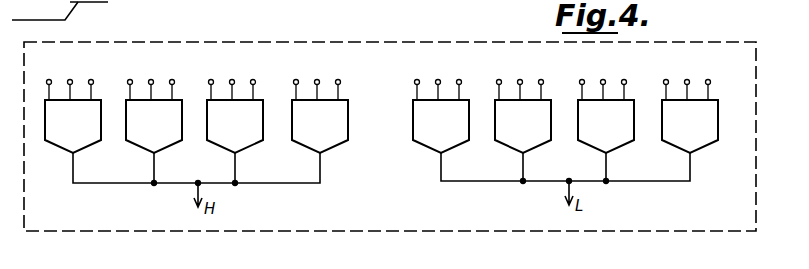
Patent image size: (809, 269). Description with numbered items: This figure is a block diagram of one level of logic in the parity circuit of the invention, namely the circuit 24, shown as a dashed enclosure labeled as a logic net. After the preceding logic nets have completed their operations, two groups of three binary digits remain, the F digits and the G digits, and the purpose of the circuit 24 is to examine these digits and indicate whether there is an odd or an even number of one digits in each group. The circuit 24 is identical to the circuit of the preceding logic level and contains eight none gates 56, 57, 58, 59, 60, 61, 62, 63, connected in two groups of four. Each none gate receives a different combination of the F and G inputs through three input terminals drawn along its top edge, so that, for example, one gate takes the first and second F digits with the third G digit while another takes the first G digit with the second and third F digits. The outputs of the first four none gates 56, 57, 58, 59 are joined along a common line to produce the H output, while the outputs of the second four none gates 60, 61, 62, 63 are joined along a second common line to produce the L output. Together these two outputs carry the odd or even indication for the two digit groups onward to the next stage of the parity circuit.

The circuit 24 is at (200, 246).
The none gate 56 is at (71, 137).
The none gate 57 is at (149, 137).
The none gate 58 is at (225, 137).
The none gate 59 is at (313, 137).
The none gate 60 is at (436, 140).
The none gate 61 is at (518, 140).
The none gate 62 is at (601, 140).
The none gate 63 is at (685, 140).